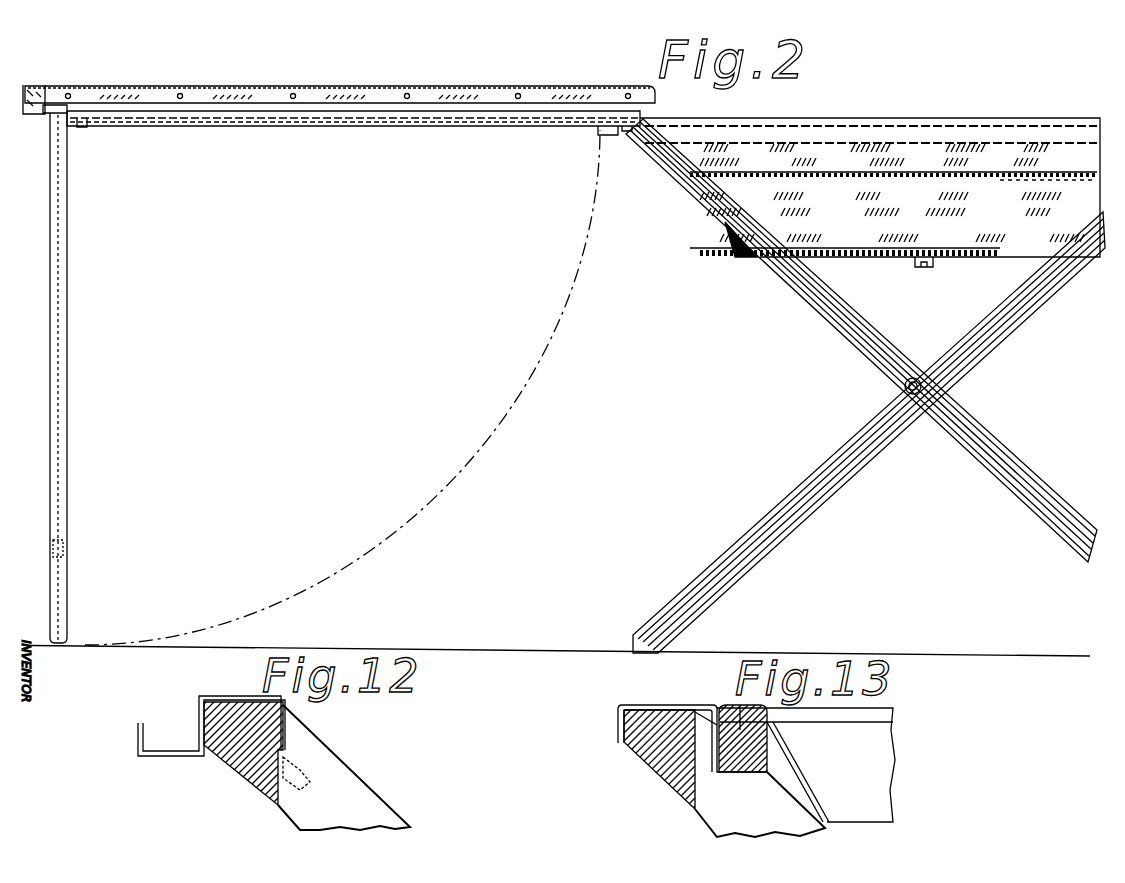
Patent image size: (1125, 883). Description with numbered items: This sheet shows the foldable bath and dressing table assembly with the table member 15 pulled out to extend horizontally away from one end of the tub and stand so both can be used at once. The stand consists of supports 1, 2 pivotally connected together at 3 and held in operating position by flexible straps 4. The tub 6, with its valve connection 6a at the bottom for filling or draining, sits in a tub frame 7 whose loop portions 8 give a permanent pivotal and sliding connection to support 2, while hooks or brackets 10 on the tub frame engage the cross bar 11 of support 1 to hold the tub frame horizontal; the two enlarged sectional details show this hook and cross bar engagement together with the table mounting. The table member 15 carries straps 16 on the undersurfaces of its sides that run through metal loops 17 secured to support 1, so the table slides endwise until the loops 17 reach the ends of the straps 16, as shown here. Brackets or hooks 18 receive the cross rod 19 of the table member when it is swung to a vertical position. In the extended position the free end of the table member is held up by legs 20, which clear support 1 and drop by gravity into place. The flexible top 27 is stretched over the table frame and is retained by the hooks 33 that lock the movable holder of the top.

In FIG. 2, the support 1 is at (815, 297).
In FIG. 12, the support 1 is at (362, 782).
In FIG. 13, the support 1 is at (728, 815).
In FIG. 2, the support 2 is at (958, 333).
In FIG. 2, the pivotal connection 3 is at (895, 383).
In FIG. 2, the flexible straps 4 is at (1030, 180).
In FIG. 2, the tub 6 is at (890, 245).
In FIG. 13, the tub 6 is at (817, 807).
In FIG. 2, the valve connection 6a is at (917, 257).
In FIG. 2, the tub frame 7 is at (782, 135).
In FIG. 13, the tub frame 7 is at (780, 737).
In FIG. 2, the loop portions 8 is at (23, 96).
In FIG. 13, the hooks or brackets 10 is at (672, 705).
In FIG. 12, the cross bar 11 is at (240, 765).
In FIG. 13, the cross bar 11 is at (650, 748).
In FIG. 2, the table member 15 is at (335, 112).
In FIG. 2, the straps 16 is at (423, 128).
In FIG. 2, the metal loops 17 is at (640, 135).
In FIG. 12, the metal loops 17 is at (302, 766).
In FIG. 2, the brackets or hooks 18 is at (603, 133).
In FIG. 12, the brackets or hooks 18 is at (160, 760).
In FIG. 2, the cross rod 19 is at (62, 547).
In FIG. 2, the legs 20 is at (68, 275).
In FIG. 2, the flexible top 27 is at (368, 86).
In FIG. 2, the hooks 33 is at (44, 113).